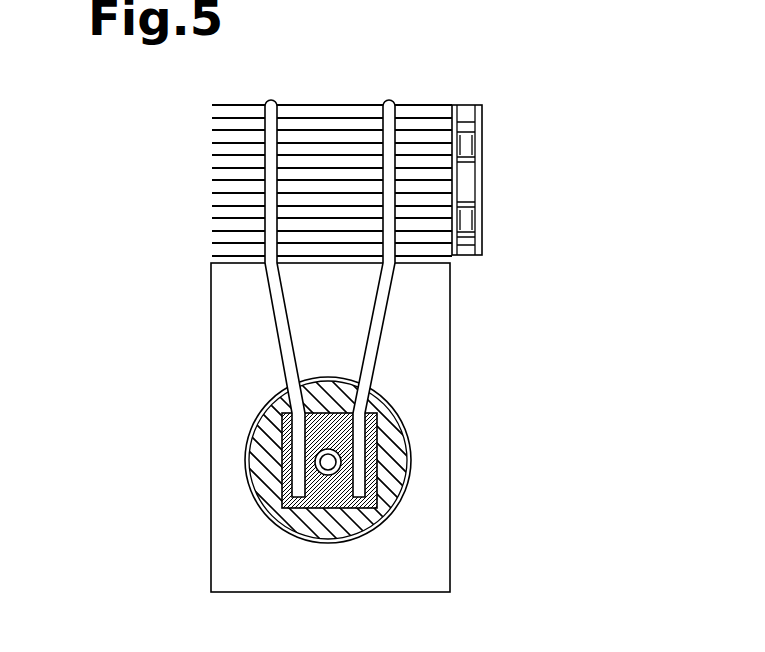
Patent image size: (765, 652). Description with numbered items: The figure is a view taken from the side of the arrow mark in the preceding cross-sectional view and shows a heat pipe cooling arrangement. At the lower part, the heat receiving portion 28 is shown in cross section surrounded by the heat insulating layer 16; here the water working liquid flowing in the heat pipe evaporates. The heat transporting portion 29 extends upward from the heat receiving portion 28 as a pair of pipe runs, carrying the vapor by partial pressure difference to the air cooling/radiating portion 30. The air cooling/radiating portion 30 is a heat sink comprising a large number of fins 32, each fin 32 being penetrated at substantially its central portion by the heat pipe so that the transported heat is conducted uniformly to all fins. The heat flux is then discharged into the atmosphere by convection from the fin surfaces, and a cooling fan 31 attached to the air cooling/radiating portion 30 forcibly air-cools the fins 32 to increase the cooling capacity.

The heat insulating layer 16 is at (410, 445).
The heat receiving portion 28 is at (400, 503).
The heat transporting portion 29 is at (381, 333).
The air cooling/radiating portion 30 is at (380, 186).
The cooling fan 31 is at (482, 190).
The fin 32 is at (219, 188).